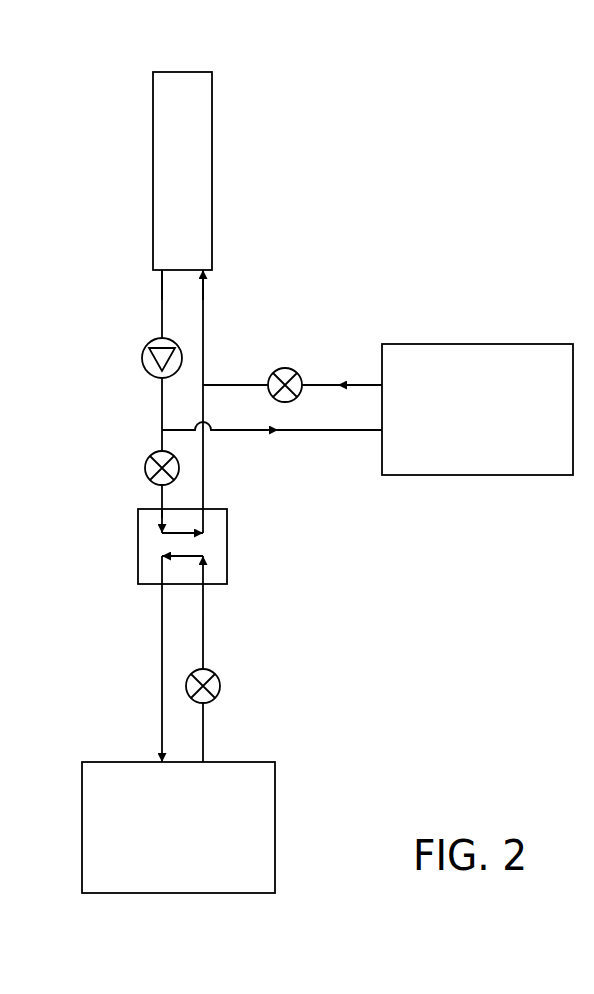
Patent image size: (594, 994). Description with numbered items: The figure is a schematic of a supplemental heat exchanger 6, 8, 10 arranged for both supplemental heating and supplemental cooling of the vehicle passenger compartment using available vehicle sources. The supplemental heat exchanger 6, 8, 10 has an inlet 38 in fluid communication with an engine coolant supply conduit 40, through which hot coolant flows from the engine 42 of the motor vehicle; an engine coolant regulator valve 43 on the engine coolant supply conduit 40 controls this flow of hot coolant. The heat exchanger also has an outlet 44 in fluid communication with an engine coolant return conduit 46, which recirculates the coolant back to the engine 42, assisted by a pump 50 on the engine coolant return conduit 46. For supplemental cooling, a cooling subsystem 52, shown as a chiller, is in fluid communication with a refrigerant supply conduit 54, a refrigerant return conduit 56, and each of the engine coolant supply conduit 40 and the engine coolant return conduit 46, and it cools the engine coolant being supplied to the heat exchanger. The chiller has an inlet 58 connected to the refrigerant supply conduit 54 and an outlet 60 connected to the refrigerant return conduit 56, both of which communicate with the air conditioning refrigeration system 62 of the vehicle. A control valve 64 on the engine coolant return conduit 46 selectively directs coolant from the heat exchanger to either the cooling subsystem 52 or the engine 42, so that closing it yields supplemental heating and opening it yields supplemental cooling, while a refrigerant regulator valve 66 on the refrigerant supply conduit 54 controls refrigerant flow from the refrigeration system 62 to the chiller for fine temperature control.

The supplemental heat exchanger 6 is at (241, 167).
The supplemental heat exchanger 8 is at (241, 167).
The supplemental heat exchanger 10 is at (224, 148).
The inlet 38 is at (203, 271).
The engine coolant supply conduit 40 is at (203, 313).
The engine 42 is at (453, 344).
The engine coolant regulator valve 43 is at (273, 369).
The outlet 44 is at (162, 271).
The engine coolant return conduit 46 is at (162, 305).
The pump 50 is at (142, 358).
The cooling subsystem 52 is at (227, 545).
The refrigerant supply conduit 54 is at (203, 655).
The refrigerant return conduit 56 is at (162, 655).
The inlet 58 is at (203, 585).
The outlet 60 is at (162, 585).
The air conditioning refrigeration system 62 is at (275, 826).
The control valve 64 is at (145, 470).
The refrigerant regulator valve 66 is at (220, 688).